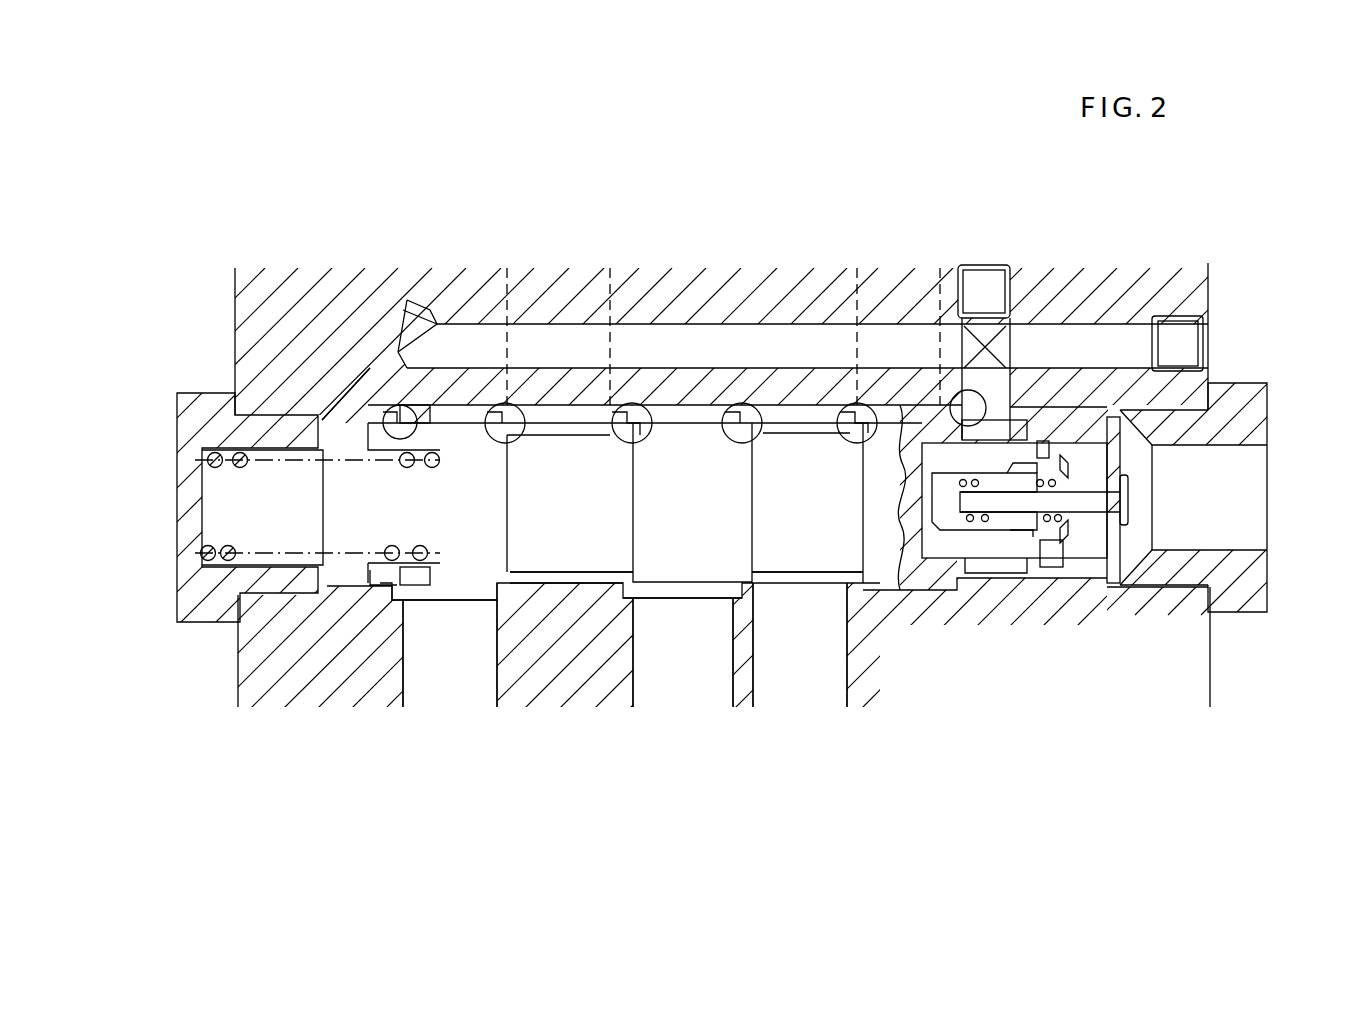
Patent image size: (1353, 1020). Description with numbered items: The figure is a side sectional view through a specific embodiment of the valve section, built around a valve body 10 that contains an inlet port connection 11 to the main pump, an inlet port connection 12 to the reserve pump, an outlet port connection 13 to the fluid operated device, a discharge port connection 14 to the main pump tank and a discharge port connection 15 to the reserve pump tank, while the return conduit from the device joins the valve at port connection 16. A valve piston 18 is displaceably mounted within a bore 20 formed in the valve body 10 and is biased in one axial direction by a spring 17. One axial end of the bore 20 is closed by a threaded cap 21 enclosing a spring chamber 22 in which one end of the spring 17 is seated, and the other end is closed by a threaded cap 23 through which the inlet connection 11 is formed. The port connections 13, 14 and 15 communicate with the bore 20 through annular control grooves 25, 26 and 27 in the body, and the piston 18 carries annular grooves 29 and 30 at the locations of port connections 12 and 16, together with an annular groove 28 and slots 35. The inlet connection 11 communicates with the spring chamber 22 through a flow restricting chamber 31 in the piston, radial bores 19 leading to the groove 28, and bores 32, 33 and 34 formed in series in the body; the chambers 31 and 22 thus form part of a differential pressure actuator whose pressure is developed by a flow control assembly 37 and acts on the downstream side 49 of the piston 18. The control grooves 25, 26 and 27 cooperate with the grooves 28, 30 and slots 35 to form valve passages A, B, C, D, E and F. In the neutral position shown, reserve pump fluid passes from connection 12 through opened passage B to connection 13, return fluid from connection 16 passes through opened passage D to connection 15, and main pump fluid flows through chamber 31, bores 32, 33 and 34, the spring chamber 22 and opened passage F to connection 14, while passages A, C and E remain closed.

The valve body 10 is at (288, 330).
The inlet port connection 11 is at (1217, 447).
The inlet port connection 12 is at (829, 658).
The outlet port connection 13 is at (846, 268).
The discharge port connection 14 is at (495, 647).
The discharge port connection 15 is at (637, 635).
The port connection 16 is at (500, 395).
The spring 17 is at (215, 457).
The valve piston 18 is at (560, 468).
The radial bores 19 is at (1040, 355).
The bore 20 is at (540, 585).
The threaded cap 21 is at (218, 597).
The spring chamber 22 is at (292, 533).
The threaded cap 23 is at (1233, 410).
The annular control groove 25 is at (905, 398).
The annular control groove 26 is at (433, 590).
The annular control groove 27 is at (677, 593).
The annular groove 28 is at (1000, 412).
The annular groove 29 is at (781, 575).
The annular groove 30 is at (588, 573).
The flow restricting chamber 31 is at (1093, 543).
The bore 32 is at (980, 383).
The bore 33 is at (720, 350).
The bore 34 is at (385, 360).
The slots 35 is at (356, 406).
The flow control assembly 37 is at (960, 542).
The downstream side 49 is at (367, 567).
The valve passage A is at (968, 330).
The valve passage B is at (870, 400).
The valve passage C is at (765, 365).
The valve passage D is at (636, 400).
The valve passage E is at (515, 405).
The valve passage F is at (418, 423).